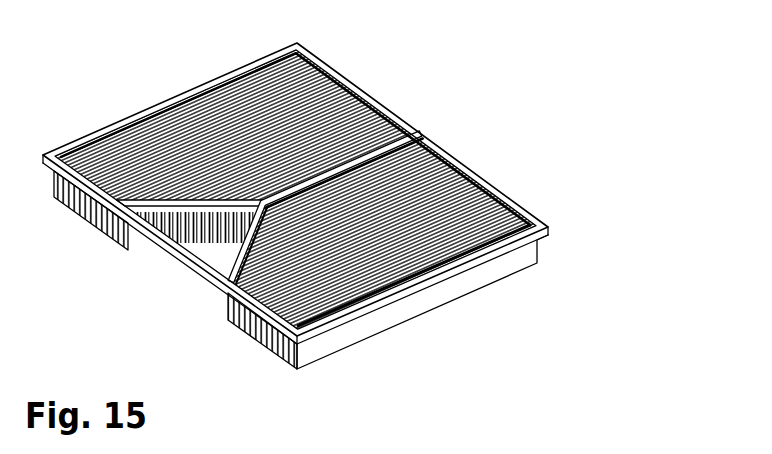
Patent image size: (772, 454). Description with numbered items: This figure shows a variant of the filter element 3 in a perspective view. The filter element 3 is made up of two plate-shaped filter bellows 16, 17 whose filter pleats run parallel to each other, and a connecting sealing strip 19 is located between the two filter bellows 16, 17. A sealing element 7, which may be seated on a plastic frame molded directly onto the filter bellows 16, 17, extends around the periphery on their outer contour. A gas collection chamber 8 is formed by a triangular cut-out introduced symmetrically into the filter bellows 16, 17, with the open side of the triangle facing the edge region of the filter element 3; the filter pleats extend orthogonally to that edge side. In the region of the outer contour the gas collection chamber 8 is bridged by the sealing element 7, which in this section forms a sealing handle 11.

The filter element 3 is at (133, 81).
The sealing element 7 is at (71, 141).
The gas collection chamber 8 is at (175, 268).
The sealing handle 11 is at (158, 237).
The filter bellows 16 is at (327, 88).
The filter bellows 17 is at (463, 197).
The connecting sealing strip 19 is at (386, 144).